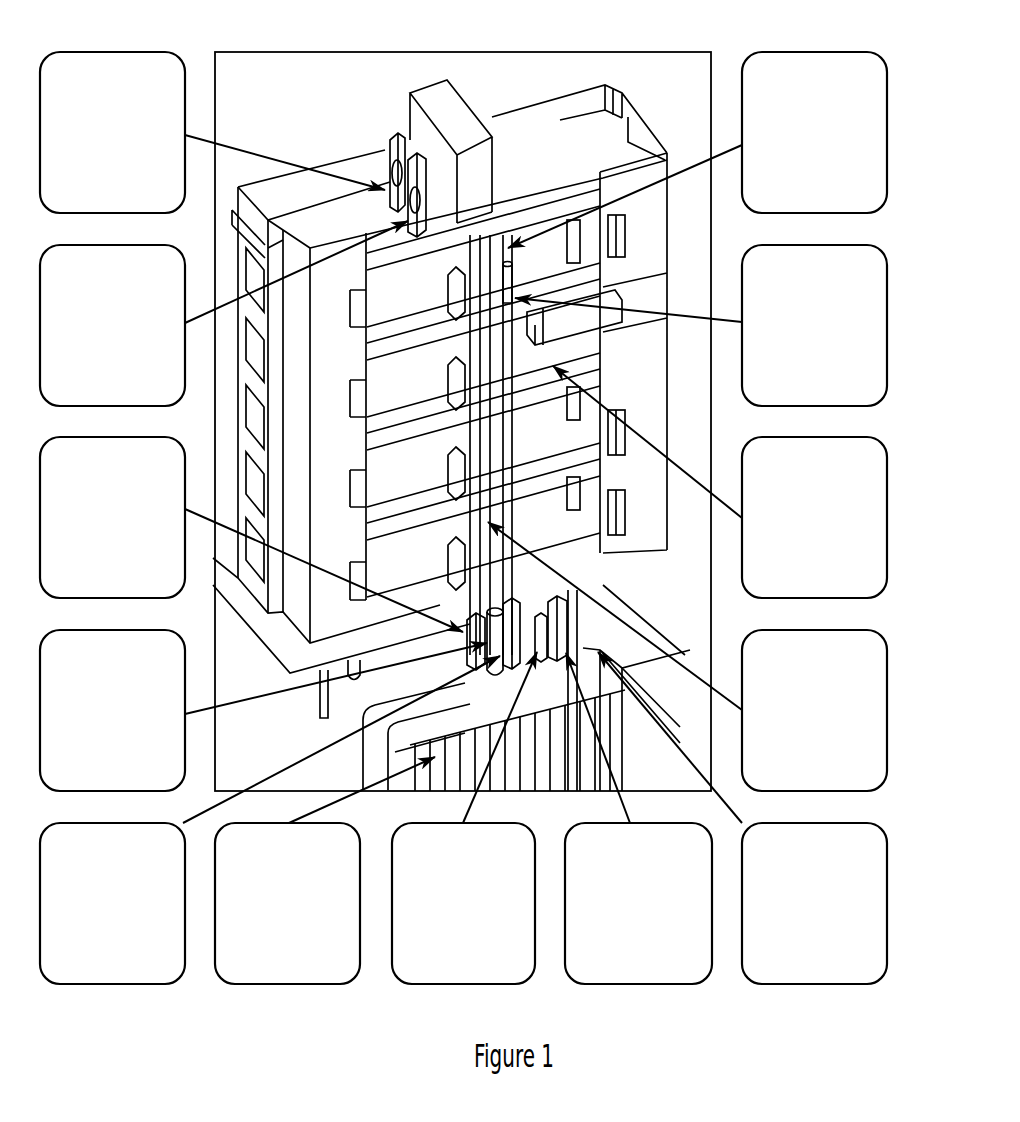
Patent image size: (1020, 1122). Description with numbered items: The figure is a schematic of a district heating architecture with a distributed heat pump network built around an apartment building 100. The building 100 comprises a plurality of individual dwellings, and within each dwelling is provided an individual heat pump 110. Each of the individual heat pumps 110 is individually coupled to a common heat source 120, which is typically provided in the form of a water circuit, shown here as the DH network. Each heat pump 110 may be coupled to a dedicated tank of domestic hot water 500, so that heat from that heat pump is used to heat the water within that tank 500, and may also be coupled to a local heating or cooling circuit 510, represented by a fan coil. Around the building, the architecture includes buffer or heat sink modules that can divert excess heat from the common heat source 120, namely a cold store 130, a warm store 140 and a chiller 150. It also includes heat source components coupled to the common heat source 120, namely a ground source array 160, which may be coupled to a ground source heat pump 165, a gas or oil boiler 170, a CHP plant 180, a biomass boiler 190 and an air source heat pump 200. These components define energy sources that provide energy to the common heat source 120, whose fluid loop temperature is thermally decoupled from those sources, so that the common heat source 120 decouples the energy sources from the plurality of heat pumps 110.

The apartment building 100 is at (684, 31).
The individual heat pump 110 is at (873, 145).
The common heat source 120 is at (873, 697).
The cold store 130 is at (45, 710).
The warm store 140 is at (45, 906).
The chiller 150 is at (45, 317).
The ground source array 160 is at (285, 973).
The ground source heat pump 165 is at (45, 512).
The gas or oil boiler 170 is at (445, 960).
The CHP plant 180 is at (640, 960).
The biomass boiler 190 is at (873, 900).
The air source heat pump 200 is at (45, 147).
The dedicated tank of domestic hot water 500 is at (868, 340).
The local heating or cooling circuit 510 is at (868, 565).